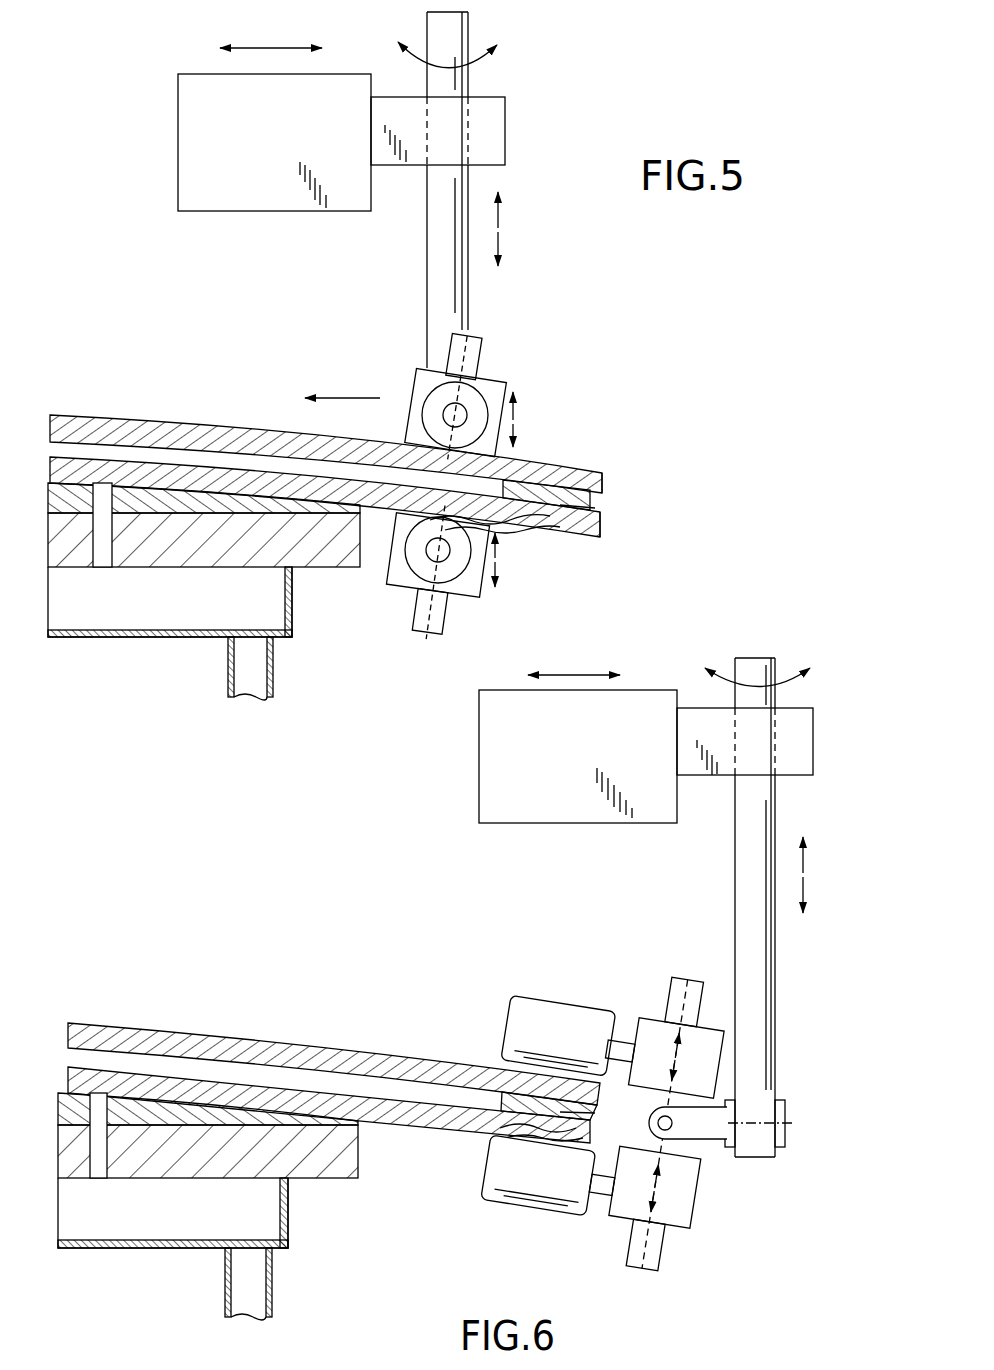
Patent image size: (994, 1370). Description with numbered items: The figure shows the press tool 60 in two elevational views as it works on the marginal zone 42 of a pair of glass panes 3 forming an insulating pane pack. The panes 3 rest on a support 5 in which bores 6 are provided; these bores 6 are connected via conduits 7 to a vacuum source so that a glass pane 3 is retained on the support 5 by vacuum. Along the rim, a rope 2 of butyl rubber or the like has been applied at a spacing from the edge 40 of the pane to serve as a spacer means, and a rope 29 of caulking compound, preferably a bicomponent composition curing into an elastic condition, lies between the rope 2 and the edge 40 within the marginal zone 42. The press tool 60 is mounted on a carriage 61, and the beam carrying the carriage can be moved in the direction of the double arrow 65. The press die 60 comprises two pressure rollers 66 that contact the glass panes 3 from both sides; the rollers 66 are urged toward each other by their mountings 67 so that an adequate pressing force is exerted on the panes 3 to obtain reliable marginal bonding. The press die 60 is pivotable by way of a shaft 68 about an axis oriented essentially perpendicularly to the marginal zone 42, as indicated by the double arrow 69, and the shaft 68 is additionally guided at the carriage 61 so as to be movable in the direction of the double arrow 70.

In FIG. 5, the rope of butyl rubber 2 is at (542, 483).
In FIG. 6, the rope of butyl rubber 2 is at (500, 1090).
In FIG. 5, the glass pane 3 is at (118, 428).
In FIG. 6, the glass pane 3 is at (148, 1042).
In FIG. 5, the support 5 is at (318, 555).
In FIG. 6, the support 5 is at (328, 1165).
In FIG. 5, the bores 6 is at (100, 548).
In FIG. 6, the bores 6 is at (97, 1160).
In FIG. 5, the conduits 7 is at (245, 680).
In FIG. 6, the conduits 7 is at (243, 1288).
In FIG. 5, the rope of caulking compound 29 is at (593, 507).
In FIG. 6, the rope of caulking compound 29 is at (595, 1113).
In FIG. 5, the edge of the glass pane 40 is at (608, 485).
In FIG. 5, the marginal zone of the glass pane 42 is at (540, 530).
In FIG. 6, the marginal zone of the glass pane 42 is at (538, 1143).
In FIG. 5, the press tool 60 is at (503, 325).
In FIG. 6, the press tool 60 is at (548, 985).
In FIG. 5, the carriage 61 is at (220, 195).
In FIG. 6, the carriage 61 is at (490, 772).
In FIG. 5, the double arrow 65 is at (263, 48).
In FIG. 6, the double arrow 65 is at (570, 675).
In FIG. 5, the pressure rollers 66 is at (477, 408).
In FIG. 6, the pressure rollers 66 is at (530, 1022).
In FIG. 5, the mountings 67 is at (420, 392).
In FIG. 6, the mountings 67 is at (655, 1035).
In FIG. 5, the shaft 68 is at (440, 288).
In FIG. 6, the shaft 68 is at (762, 1030).
In FIG. 5, the double arrow 69 is at (490, 67).
In FIG. 6, the double arrow 69 is at (805, 690).
In FIG. 5, the double arrow 70 is at (498, 230).
In FIG. 6, the double arrow 70 is at (805, 877).